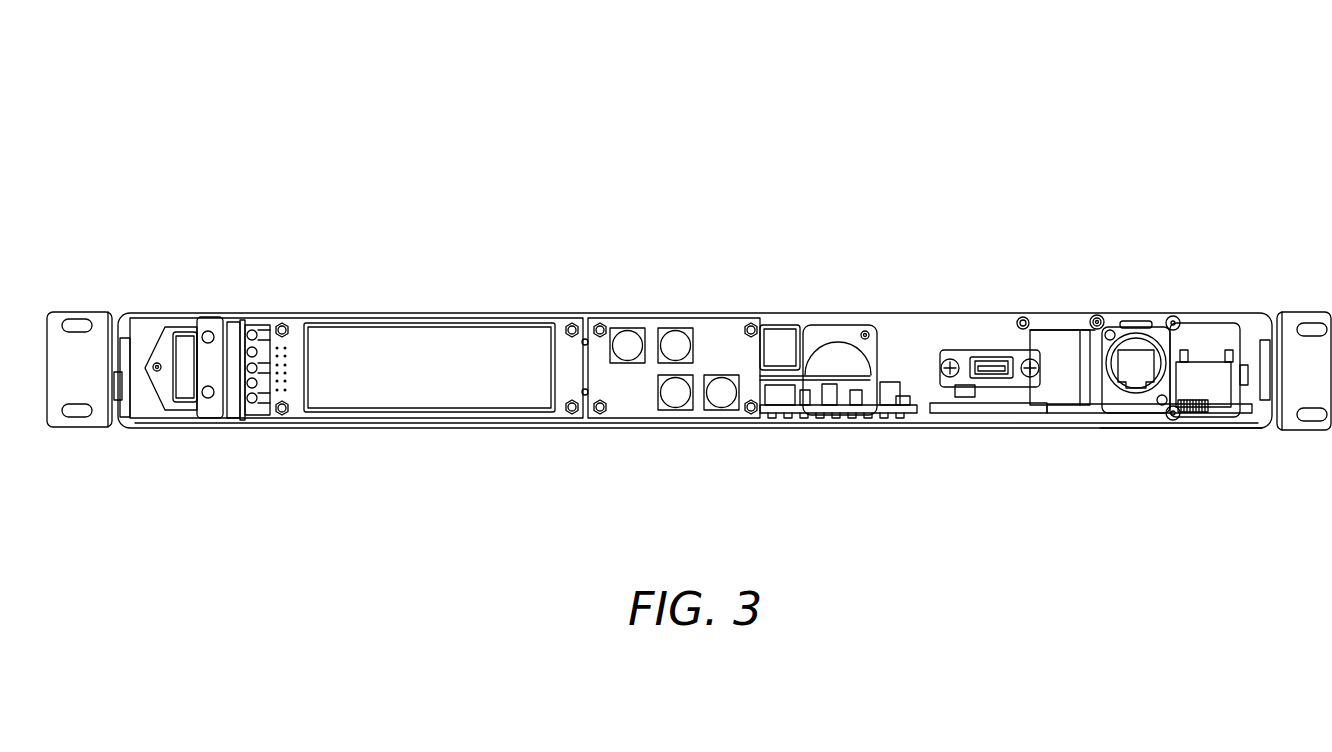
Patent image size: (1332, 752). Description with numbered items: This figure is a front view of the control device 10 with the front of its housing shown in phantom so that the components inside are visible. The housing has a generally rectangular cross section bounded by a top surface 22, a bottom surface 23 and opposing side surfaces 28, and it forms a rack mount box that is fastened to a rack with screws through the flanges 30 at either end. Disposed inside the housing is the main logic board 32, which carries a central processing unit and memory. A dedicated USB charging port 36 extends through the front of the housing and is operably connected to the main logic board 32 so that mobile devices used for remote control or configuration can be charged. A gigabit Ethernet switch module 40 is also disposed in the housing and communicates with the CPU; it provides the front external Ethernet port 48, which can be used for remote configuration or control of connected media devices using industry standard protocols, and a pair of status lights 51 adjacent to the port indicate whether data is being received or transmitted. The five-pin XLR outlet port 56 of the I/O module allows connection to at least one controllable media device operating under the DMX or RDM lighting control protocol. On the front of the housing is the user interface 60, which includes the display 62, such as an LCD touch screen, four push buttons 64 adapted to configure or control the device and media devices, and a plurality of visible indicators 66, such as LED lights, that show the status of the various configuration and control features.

The control device 10 is at (1208, 131).
The top surface 22 is at (943, 318).
The bottom surface 23 is at (1210, 425).
The side surfaces 28 is at (118, 398).
The flanges 30 is at (93, 384).
The main logic board 32 is at (855, 408).
The USB charging port 36 is at (983, 380).
The gigabit Ethernet switch module 40 is at (1059, 407).
The front external Ethernet port 48 is at (1133, 362).
The status lights 51 is at (1176, 320).
The XLR-5 outlet port 56 is at (838, 355).
The user interface 60 is at (760, 468).
The display 62 is at (414, 378).
The push buttons 64 is at (628, 342).
The visible indicators 66 is at (258, 371).